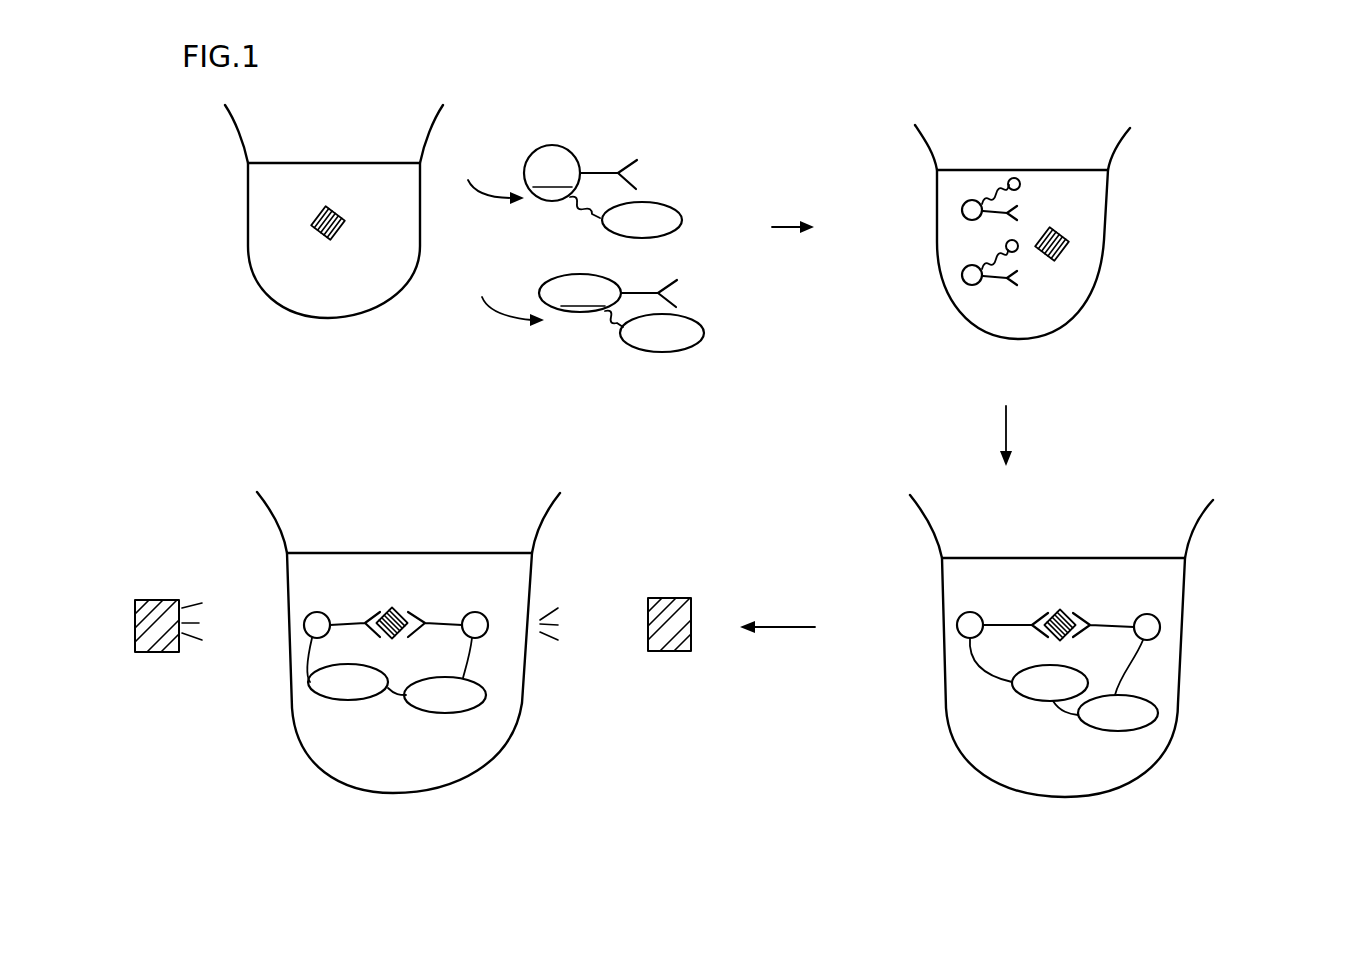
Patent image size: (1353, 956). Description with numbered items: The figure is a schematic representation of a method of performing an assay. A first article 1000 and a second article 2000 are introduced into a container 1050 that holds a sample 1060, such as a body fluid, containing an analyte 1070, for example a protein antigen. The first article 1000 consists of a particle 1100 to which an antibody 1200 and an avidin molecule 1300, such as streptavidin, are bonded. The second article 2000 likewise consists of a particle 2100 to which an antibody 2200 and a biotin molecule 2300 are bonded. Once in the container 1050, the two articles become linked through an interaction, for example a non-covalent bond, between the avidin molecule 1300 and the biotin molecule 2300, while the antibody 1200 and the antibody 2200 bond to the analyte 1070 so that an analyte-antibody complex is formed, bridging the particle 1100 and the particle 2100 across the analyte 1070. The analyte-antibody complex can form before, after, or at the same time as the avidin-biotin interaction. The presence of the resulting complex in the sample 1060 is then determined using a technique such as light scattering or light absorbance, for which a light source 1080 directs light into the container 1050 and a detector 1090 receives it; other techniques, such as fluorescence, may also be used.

The first article 1000 is at (488, 179).
The container 1050 is at (257, 275).
The sample 1060 is at (322, 289).
The analyte 1070 is at (320, 199).
The light source 1080 is at (147, 644).
The detector 1090 is at (653, 643).
The particle 1100 is at (954, 264).
The antibody 1200 is at (604, 162).
The avidin molecule 1300 is at (985, 249).
The second article 2000 is at (503, 299).
The particle 2100 is at (954, 197).
The antibody 2200 is at (655, 272).
The biotin molecule 2300 is at (1011, 170).